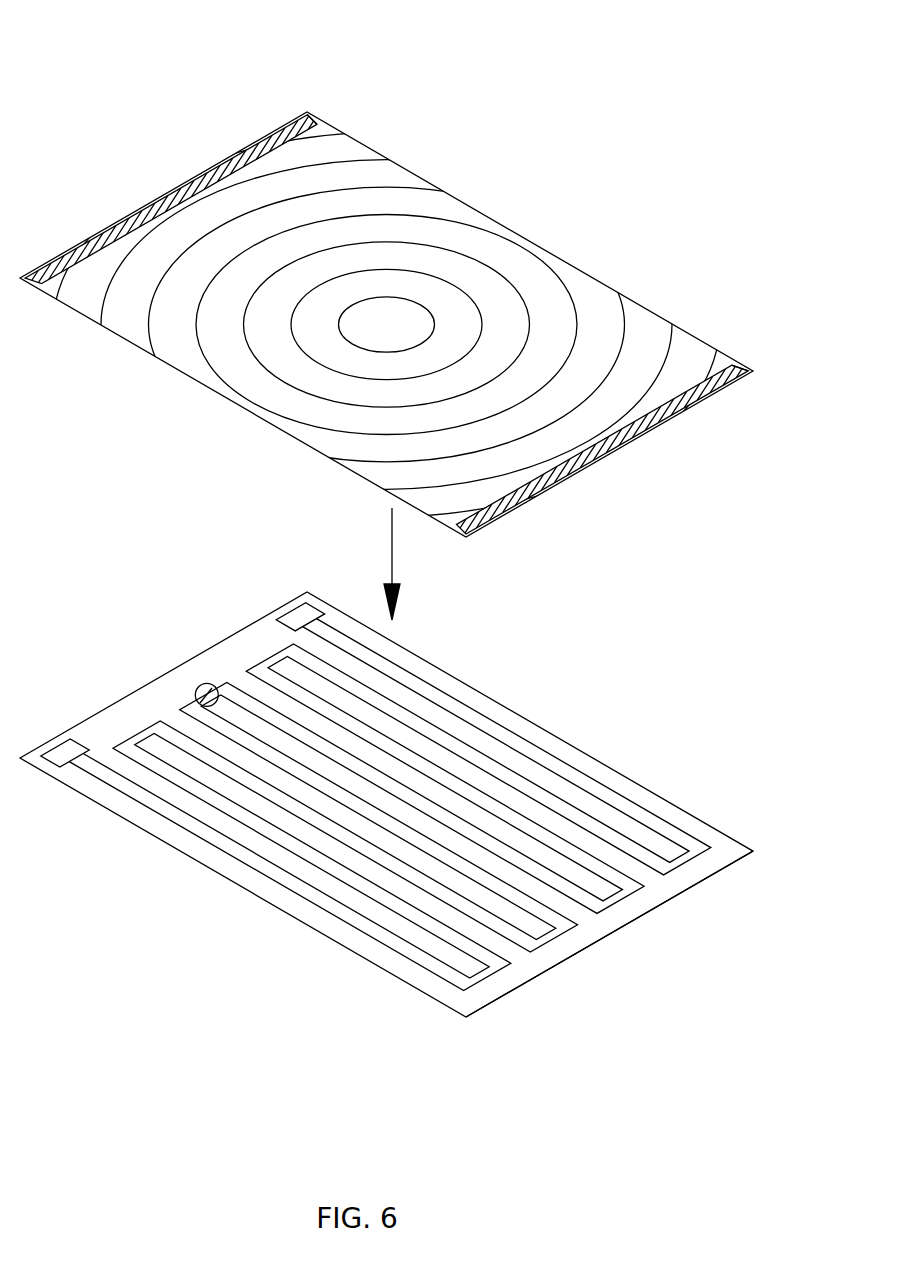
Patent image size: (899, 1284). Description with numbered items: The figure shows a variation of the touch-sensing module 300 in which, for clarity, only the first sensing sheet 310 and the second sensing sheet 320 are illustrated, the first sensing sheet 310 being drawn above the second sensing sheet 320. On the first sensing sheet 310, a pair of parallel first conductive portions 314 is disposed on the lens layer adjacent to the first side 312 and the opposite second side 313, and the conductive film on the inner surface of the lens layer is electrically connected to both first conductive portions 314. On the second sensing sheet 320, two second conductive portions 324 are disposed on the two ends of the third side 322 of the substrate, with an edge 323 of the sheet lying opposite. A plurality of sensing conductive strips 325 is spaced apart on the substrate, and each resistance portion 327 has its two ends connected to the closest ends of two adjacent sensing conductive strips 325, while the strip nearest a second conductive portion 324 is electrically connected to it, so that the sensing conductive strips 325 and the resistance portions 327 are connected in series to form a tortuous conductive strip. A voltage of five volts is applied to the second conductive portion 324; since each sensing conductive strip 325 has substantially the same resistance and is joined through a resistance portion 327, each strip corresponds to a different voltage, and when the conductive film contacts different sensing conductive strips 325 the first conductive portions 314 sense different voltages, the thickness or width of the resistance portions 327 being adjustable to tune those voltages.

The touch-sensing module 300 is at (68, 31).
The first sensing sheet 310 is at (384, 306).
The first side 312 is at (187, 181).
The second side 313 is at (653, 428).
The first conductive portion 314 is at (262, 152).
The second sensing sheet 320 is at (381, 770).
The third side 322 is at (236, 632).
The substrate edge 323 is at (662, 905).
The second conductive portion 324 is at (297, 618).
The sensing conductive strip 325 is at (283, 838).
The resistance portion 327 is at (200, 686).